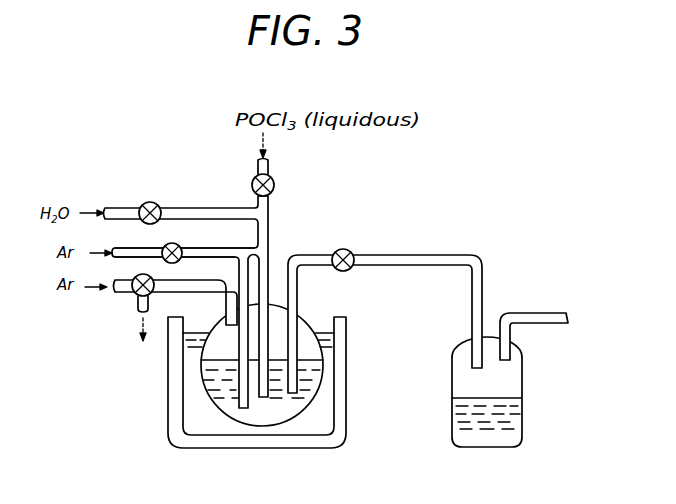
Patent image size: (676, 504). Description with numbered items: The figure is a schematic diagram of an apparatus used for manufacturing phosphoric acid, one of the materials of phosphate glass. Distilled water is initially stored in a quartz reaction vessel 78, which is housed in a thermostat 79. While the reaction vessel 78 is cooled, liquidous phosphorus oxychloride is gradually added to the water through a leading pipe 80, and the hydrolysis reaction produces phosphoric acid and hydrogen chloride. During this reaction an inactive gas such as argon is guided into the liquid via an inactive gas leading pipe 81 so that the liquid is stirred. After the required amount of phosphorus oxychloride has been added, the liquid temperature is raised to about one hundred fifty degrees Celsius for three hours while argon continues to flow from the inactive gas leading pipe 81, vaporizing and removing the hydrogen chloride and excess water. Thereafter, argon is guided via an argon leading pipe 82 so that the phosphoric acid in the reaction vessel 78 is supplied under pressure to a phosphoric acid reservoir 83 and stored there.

The quartz reaction vessel 78 is at (323, 372).
The thermostat 79 is at (346, 427).
The leading pipe 80 is at (270, 207).
The inactive gas leading pipe 81 is at (229, 248).
The argon leading pipe 82 is at (222, 280).
The phosphoric acid reservoir 83 is at (453, 357).